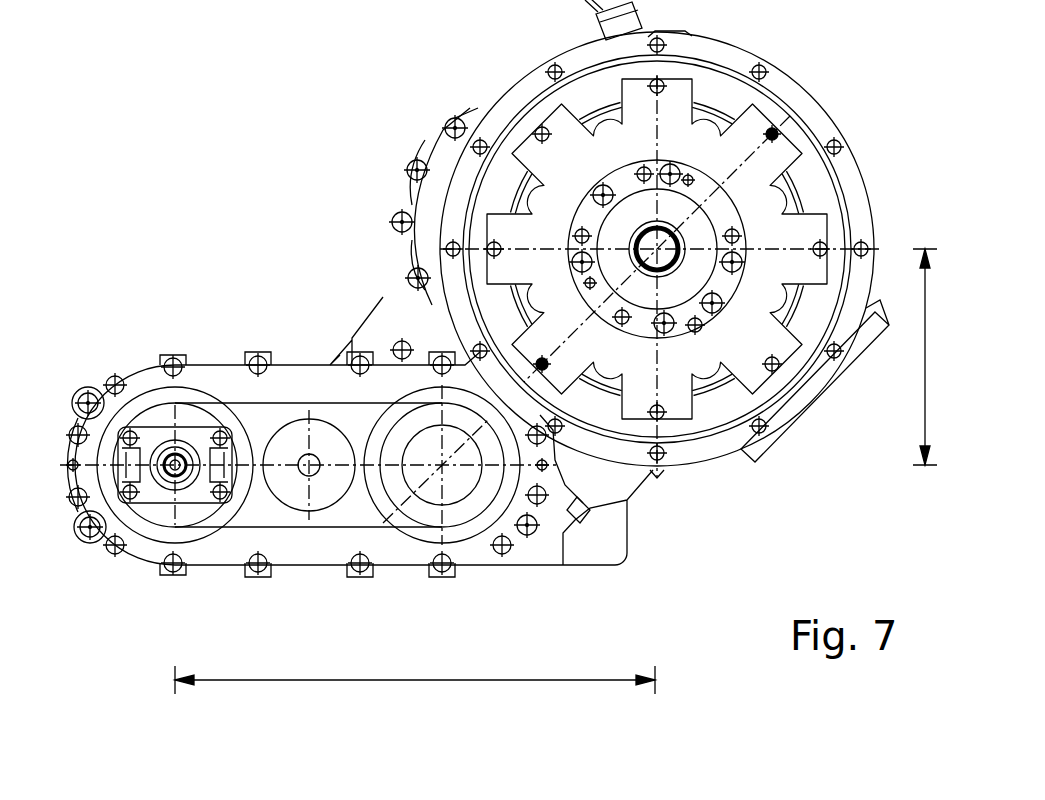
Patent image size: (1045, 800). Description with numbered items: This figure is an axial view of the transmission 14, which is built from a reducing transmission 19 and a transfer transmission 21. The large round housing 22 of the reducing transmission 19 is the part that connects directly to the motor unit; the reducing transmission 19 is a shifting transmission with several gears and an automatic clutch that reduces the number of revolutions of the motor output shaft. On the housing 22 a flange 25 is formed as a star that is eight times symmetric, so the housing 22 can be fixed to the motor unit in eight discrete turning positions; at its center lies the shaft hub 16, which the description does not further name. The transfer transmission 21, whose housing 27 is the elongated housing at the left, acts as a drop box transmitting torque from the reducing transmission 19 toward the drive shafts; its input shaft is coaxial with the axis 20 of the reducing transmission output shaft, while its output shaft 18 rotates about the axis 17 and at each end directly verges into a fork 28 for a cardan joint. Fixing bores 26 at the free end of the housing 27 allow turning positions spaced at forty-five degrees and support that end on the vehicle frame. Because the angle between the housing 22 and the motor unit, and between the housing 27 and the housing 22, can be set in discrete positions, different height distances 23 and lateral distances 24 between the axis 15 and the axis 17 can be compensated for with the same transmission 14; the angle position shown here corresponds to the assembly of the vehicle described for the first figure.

The transmission 14 is at (400, 136).
The axis 15 is at (677, 233).
The output shaft hub 16 is at (665, 262).
The axis 17 is at (183, 453).
The output shaft 18 is at (160, 487).
The reducing transmission 19 is at (813, 193).
The axis 20 is at (442, 465).
The transfer transmission 21 is at (302, 365).
The housing 22 is at (737, 62).
The height distance 23 is at (925, 360).
The lateral distance 24 is at (357, 680).
The flange 25 is at (813, 230).
The fixing bores 26 is at (107, 622).
The housing 27 is at (303, 545).
The fork 28 is at (212, 503).